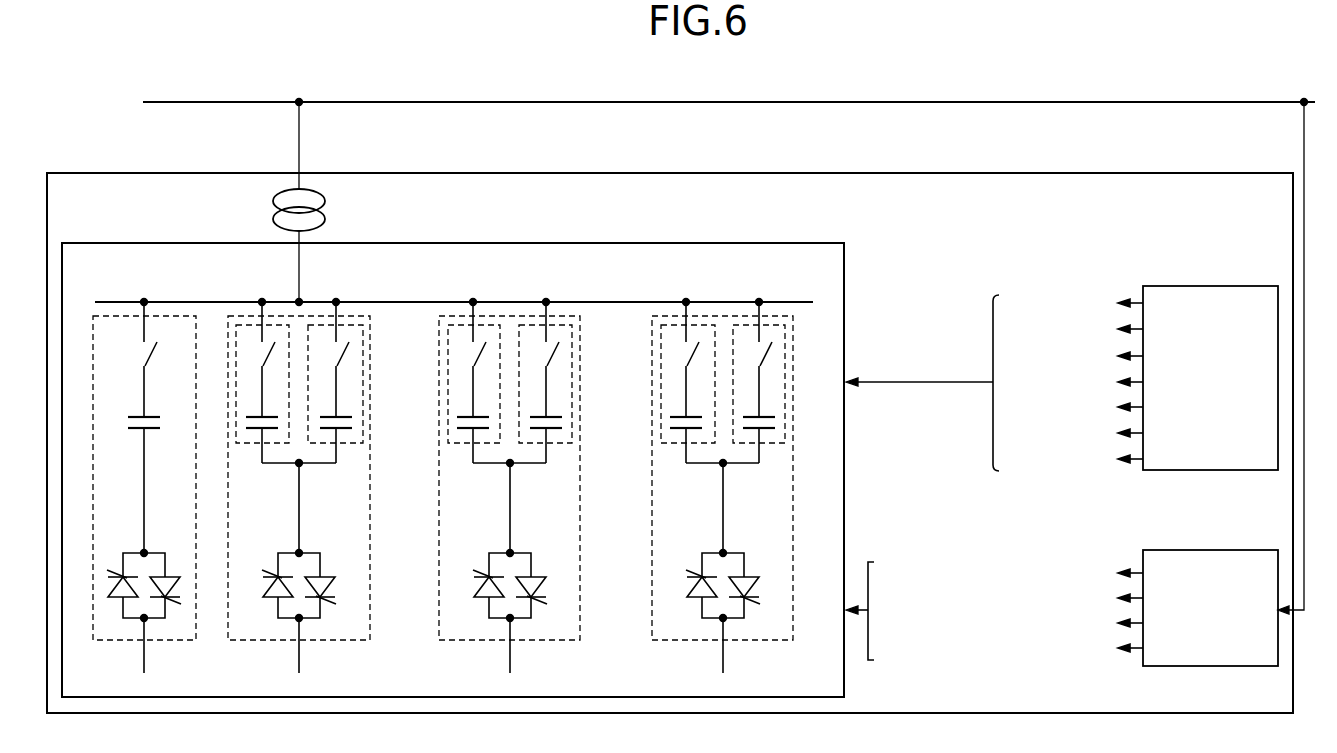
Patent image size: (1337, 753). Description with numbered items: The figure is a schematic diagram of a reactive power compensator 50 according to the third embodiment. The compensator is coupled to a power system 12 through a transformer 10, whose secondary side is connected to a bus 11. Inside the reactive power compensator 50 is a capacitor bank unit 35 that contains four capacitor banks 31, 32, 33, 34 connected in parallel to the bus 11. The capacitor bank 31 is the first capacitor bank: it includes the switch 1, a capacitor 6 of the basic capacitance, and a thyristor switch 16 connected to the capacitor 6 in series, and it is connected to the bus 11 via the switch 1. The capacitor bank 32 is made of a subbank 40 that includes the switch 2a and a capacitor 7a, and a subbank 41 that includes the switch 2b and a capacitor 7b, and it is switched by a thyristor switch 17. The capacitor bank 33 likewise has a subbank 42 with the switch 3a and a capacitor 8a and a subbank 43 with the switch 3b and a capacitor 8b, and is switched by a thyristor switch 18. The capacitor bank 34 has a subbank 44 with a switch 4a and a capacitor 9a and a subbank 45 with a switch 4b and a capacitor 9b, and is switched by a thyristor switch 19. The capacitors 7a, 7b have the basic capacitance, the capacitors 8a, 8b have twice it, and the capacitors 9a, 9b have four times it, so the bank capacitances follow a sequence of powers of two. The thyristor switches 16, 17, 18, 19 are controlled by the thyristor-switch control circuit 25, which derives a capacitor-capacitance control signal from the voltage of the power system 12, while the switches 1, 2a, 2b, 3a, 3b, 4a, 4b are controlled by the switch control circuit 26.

The switch 1 is at (140, 353).
The switch 2a is at (262, 352).
The switch 2b is at (347, 358).
The switch 3a is at (472, 352).
The switch 3b is at (557, 355).
The switch 4a is at (685, 352).
The switch 4b is at (770, 355).
The capacitor 6 is at (128, 427).
The capacitor 7a is at (247, 427).
The capacitor 7b is at (350, 429).
The capacitor 8a is at (457, 427).
The capacitor 8b is at (563, 423).
The capacitor 9a is at (670, 427).
The capacitor 9b is at (778, 423).
The transformer 10 is at (327, 207).
The bus 11 is at (222, 289).
The power system 12 is at (342, 102).
The thyristor switch 16 is at (120, 565).
The thyristor switch 17 is at (272, 565).
The thyristor switch 18 is at (485, 564).
The thyristor switch 19 is at (700, 564).
The thyristor-switch control circuit 25 is at (1203, 538).
The switch control circuit 26 is at (1199, 275).
The capacitor bank 31 is at (189, 642).
The capacitor bank 32 is at (364, 642).
The capacitor bank 33 is at (564, 642).
The capacitor bank 34 is at (778, 642).
The capacitor bank unit 35 is at (513, 231).
The subbank 40 is at (246, 443).
The subbank 41 is at (352, 443).
The subbank 42 is at (458, 443).
The subbank 43 is at (562, 443).
The subbank 44 is at (671, 443).
The subbank 45 is at (775, 443).
The reactive power compensator 50 is at (591, 160).